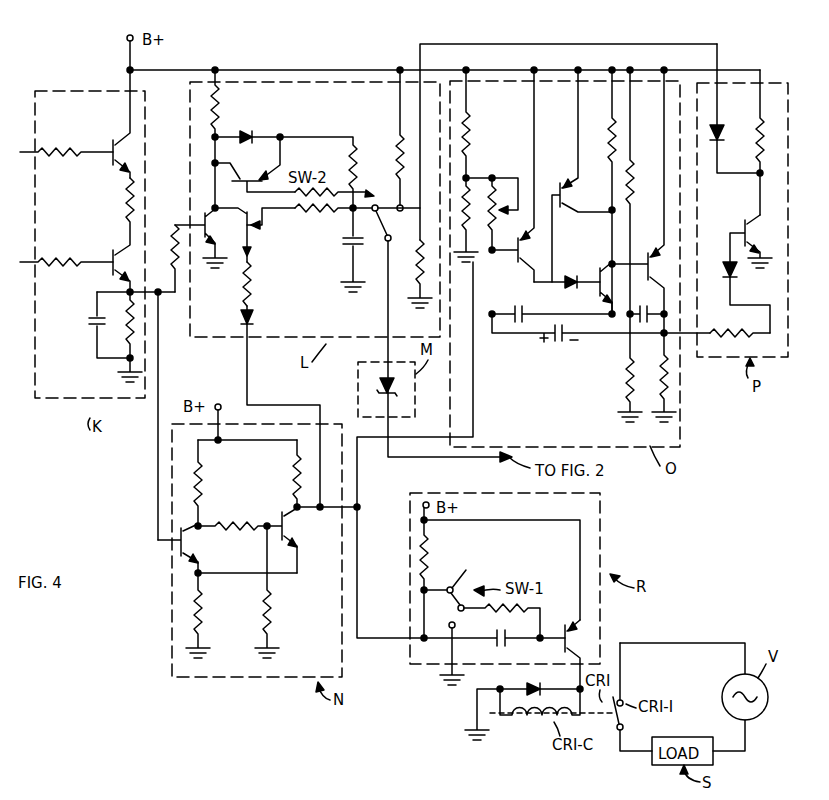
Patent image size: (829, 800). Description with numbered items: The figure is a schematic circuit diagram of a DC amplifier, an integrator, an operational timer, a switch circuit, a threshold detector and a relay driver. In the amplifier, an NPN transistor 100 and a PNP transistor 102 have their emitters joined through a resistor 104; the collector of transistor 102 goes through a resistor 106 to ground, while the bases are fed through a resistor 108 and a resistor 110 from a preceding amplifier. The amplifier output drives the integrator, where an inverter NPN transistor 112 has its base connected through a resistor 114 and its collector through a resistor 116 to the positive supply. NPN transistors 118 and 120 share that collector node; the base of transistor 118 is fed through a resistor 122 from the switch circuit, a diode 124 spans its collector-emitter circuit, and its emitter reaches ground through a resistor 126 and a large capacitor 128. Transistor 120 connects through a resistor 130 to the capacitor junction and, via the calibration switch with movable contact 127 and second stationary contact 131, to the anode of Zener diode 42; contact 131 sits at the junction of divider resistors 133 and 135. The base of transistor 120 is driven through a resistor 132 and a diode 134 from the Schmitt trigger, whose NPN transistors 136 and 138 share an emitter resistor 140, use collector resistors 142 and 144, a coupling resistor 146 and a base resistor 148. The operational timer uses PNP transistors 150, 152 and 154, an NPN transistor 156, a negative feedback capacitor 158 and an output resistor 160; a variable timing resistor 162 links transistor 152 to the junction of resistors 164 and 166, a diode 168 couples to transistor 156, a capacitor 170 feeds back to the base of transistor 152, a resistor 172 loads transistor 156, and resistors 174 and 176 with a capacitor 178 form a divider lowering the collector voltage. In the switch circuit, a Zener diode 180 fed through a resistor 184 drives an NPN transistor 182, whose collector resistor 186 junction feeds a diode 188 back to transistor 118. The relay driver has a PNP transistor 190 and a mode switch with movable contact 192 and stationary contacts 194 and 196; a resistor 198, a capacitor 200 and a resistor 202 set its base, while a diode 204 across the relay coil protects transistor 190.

The Zener diode 42 is at (376, 388).
The NPN transistor 100 is at (108, 164).
The PNP transistor 102 is at (114, 250).
The resistor 104 is at (120, 212).
The resistor 106 is at (122, 316).
The resistor 108 is at (64, 148).
The resistor 110 is at (72, 264).
The inverter NPN transistor 112 is at (226, 226).
The resistor 114 is at (171, 238).
The resistor 116 is at (220, 104).
The NPN transistor 118 is at (272, 177).
The NPN transistor 120 is at (252, 240).
The resistor 122 is at (271, 221).
The diode 124 is at (254, 134).
The resistor 126 is at (356, 156).
The movable contact 127 is at (398, 242).
The capacitor 128 is at (344, 244).
The resistor 130 is at (310, 212).
The second stationary contact 131 is at (376, 198).
The resistor 132 is at (250, 284).
The resistor 133 is at (414, 262).
The diode 134 is at (256, 318).
The resistor 135 is at (396, 134).
The NPN transistor 136 is at (192, 546).
The NPN transistor 138 is at (312, 540).
The resistor 140 is at (202, 624).
The resistor 142 is at (202, 492).
The resistor 144 is at (292, 470).
The resistor 146 is at (232, 524).
The resistor 148 is at (278, 608).
The PNP transistor 150 is at (570, 180).
The PNP transistor 152 is at (524, 276).
The PNP transistor 154 is at (650, 250).
The NPN transistor 156 is at (600, 260).
The negative feedback capacitor 158 is at (550, 350).
The output resistor 160 is at (668, 384).
The variable timing resistor 162 is at (496, 228).
The resistor 164 is at (470, 190).
The resistor 166 is at (470, 134).
The diode 168 is at (570, 290).
The capacitor 170 is at (530, 300).
The resistor 172 is at (608, 124).
The resistor 174 is at (634, 178).
The resistor 176 is at (626, 372).
The capacitor 178 is at (656, 300).
The Zener diode 180 is at (724, 266).
The NPN transistor 182 is at (746, 222).
The resistor 184 is at (718, 328).
The resistor 186 is at (758, 136).
The diode 188 is at (740, 144).
The PNP transistor 190 is at (586, 642).
The movable contact 192 is at (448, 602).
The stationary contact 194 is at (464, 586).
The stationary contact 196 is at (448, 626).
The resistor 198 is at (420, 566).
The capacitor 200 is at (502, 646).
The resistor 202 is at (502, 610).
The diode 204 is at (528, 682).